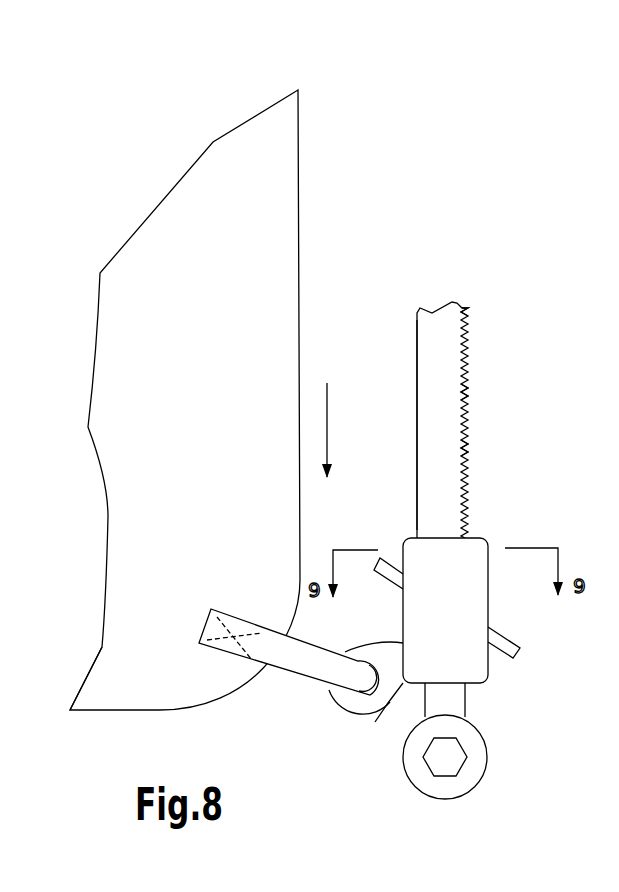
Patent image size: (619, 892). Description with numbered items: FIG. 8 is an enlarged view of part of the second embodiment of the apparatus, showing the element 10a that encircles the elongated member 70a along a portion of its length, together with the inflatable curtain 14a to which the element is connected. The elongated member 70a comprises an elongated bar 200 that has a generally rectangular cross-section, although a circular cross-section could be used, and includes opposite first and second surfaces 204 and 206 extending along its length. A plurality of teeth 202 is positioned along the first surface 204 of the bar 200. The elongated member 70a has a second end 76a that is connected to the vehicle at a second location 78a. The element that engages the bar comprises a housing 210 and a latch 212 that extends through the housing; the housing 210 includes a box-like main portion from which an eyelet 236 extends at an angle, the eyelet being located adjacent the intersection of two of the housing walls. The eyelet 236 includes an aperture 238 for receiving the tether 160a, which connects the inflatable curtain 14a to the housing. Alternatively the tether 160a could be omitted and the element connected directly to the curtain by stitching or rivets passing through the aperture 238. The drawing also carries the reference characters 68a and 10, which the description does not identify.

The element 10a is at (157, 172).
The inflatable curtain 14a is at (113, 677).
The tether 160a is at (290, 665).
The eyelet 236 is at (350, 713).
The aperture 238 is at (373, 700).
The elongated bar 200 is at (447, 333).
The second surface 206 is at (417, 378).
The elongated member 70a is at (450, 368).
The first surface 204 is at (468, 395).
The teeth 202 is at (468, 450).
The housing 210 is at (428, 573).
The latch 212 is at (514, 647).
The adjustment assembly 68a is at (508, 527).
The direction indicator 10 is at (535, 662).
The second end 76a is at (452, 700).
The second location 78a is at (452, 755).